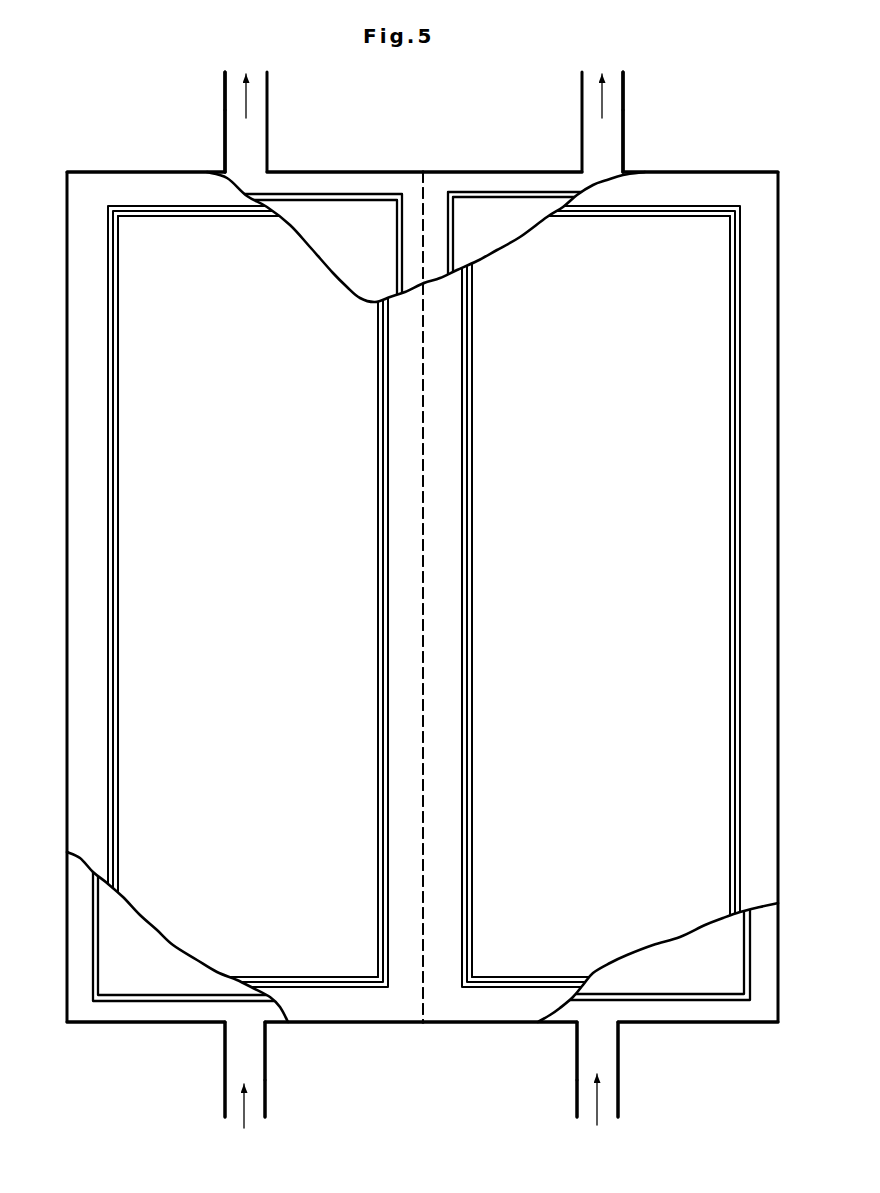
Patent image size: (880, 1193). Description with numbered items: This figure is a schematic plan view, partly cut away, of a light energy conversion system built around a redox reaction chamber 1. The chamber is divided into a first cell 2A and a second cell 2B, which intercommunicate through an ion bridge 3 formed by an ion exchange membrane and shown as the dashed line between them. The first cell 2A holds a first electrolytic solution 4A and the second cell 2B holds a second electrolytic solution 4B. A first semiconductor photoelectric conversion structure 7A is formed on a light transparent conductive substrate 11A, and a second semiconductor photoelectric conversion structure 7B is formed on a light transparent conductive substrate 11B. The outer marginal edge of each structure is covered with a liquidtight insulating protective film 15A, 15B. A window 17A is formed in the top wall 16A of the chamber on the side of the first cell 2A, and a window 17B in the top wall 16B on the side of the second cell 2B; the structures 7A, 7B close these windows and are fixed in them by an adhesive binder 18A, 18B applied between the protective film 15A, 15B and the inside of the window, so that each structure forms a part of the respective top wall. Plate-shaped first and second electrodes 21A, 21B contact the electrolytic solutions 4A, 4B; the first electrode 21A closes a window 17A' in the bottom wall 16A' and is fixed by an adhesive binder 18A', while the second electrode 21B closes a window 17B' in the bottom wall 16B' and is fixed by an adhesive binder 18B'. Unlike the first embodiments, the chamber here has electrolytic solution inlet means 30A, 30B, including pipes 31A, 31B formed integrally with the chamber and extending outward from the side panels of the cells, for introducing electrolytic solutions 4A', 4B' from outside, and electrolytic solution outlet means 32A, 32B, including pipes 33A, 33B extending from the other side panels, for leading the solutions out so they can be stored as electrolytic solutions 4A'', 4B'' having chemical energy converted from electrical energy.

The redox reaction chamber 1 is at (422, 594).
The first cell 2A is at (298, 170).
The second cell 2B is at (512, 170).
The ion bridge 3 is at (443, 577).
The first electrolytic solution 4A is at (245, 597).
The second electrolytic solution 4B is at (601, 597).
The electrolytic solution 4A' is at (247, 1124).
The electrolytic solution 4A'' is at (247, 79).
The electrolytic solution 4B' is at (595, 1117).
The electrolytic solution 4B'' is at (600, 79).
The first semiconductor photoelectric conversion structure 7A is at (257, 603).
The second semiconductor photoelectric conversion structure 7B is at (620, 603).
The light transparent conductive substrate 11A is at (225, 580).
The light transparent conductive substrate 11B is at (622, 582).
The liquidtight insulating protective film 15A is at (118, 212).
The liquidtight insulating protective film 15B is at (722, 208).
The top wall 16A is at (245, 600).
The bottom wall 16A' is at (173, 594).
The top wall 16B is at (600, 601).
The bottom wall 16B' is at (599, 594).
The window 17A is at (222, 540).
The window 17A' is at (201, 988).
The window 17B is at (617, 543).
The window 17B' is at (628, 986).
The adhesive binder 18A is at (225, 525).
The adhesive binder 18A' is at (181, 972).
The adhesive binder 18B is at (614, 526).
The adhesive binder 18B' is at (651, 999).
The first electrode 21A is at (337, 222).
The second electrode 21B is at (483, 212).
The electrolytic solution inlet means 30A is at (269, 1064).
The electrolytic solution inlet means 30B is at (574, 1068).
The pipe 31A is at (266, 1104).
The pipe 31B is at (576, 1105).
The electrolytic solution outlet means 32A is at (222, 91).
The electrolytic solution outlet means 32B is at (626, 93).
The pipe 33A is at (224, 130).
The pipe 33B is at (640, 128).